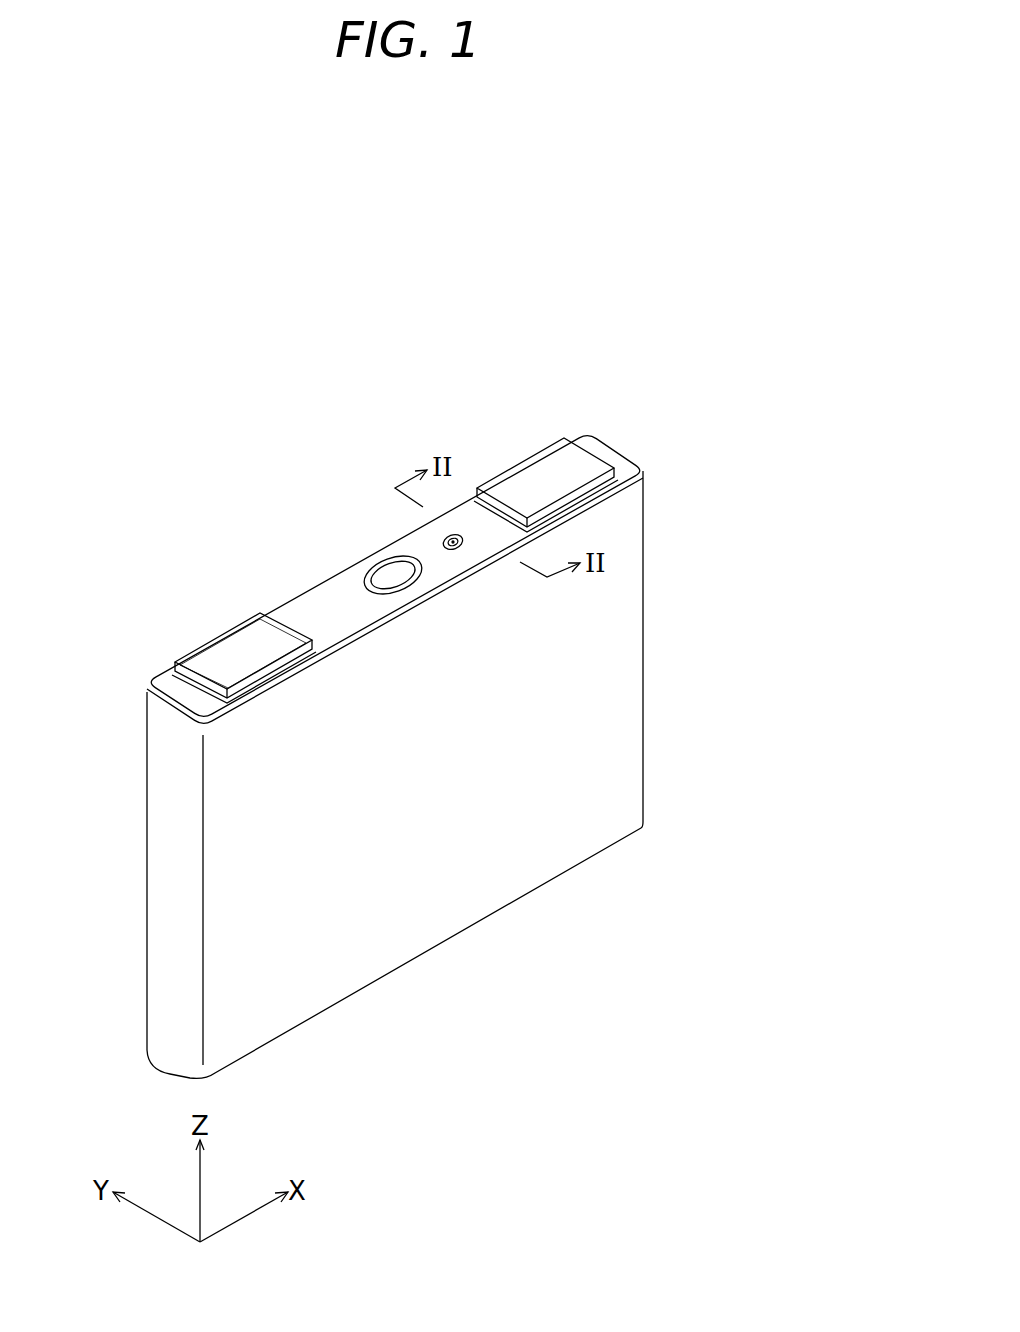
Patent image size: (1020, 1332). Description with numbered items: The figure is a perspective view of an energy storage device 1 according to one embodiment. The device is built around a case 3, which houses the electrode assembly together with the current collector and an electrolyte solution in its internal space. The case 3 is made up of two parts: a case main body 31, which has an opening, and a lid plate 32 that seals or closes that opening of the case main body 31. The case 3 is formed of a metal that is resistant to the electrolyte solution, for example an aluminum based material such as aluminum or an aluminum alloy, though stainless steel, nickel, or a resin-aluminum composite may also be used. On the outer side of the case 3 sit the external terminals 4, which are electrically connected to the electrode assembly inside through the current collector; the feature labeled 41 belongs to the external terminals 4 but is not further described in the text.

The energy storage device 1 is at (642, 345).
The case 3 is at (750, 517).
The case main body 31 is at (615, 633).
The lid plate 32 is at (630, 451).
The external terminals 4 is at (533, 482).
The terminal top surface 41 is at (260, 638).